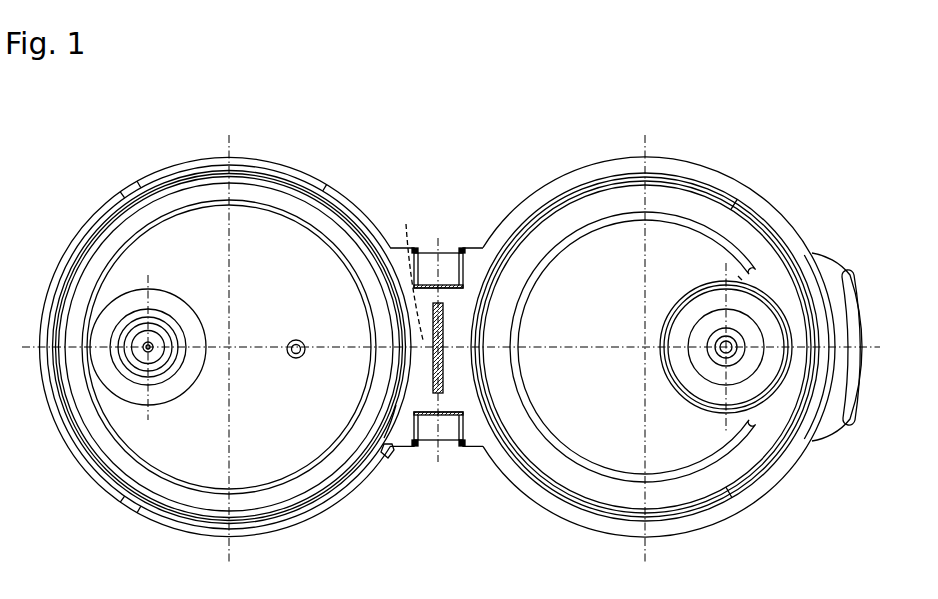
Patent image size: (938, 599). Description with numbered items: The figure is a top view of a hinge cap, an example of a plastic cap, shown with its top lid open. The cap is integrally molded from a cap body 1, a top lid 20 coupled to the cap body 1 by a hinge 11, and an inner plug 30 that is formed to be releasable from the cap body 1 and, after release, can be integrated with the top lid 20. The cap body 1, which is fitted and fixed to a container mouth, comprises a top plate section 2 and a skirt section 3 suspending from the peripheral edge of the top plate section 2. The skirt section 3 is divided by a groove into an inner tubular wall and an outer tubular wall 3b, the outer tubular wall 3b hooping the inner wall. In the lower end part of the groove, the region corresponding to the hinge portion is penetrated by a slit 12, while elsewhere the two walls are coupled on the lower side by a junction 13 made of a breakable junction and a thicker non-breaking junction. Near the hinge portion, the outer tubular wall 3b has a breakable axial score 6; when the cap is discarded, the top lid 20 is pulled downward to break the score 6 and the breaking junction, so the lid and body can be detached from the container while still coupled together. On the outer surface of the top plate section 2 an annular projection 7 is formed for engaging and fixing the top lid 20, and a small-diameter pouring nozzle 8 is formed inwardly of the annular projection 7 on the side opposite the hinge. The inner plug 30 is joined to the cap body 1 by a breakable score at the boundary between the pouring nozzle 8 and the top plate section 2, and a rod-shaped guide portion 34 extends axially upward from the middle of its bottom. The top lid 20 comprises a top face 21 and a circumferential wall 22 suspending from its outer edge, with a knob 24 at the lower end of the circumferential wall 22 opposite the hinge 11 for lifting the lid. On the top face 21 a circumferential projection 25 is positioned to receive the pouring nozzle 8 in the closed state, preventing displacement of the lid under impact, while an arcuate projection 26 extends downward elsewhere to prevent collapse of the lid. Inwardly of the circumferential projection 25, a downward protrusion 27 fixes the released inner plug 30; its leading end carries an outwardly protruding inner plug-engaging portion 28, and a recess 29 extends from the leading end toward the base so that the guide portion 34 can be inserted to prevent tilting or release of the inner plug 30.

The cap body 1 is at (287, 150).
The top plate section 2 is at (200, 237).
The skirt section 3 is at (182, 522).
The outer tubular wall 3b is at (311, 182).
The axial score 6 is at (396, 460).
The annular projection 7 is at (88, 247).
The pouring nozzle 8 is at (125, 392).
The hinge 11 is at (447, 252).
The slit 12 is at (397, 423).
The junction 13 is at (368, 233).
The top lid 20 is at (690, 152).
The top face 21 is at (718, 212).
The circumferential wall 22 is at (690, 527).
The knob 24 is at (852, 418).
The circumferential projection 25 is at (767, 297).
The arcuate projection 26 is at (577, 463).
The protrusion 27 is at (716, 383).
The inner plug-engaging portion 28 is at (716, 361).
The recess 29 is at (705, 328).
The inner plug 30 is at (167, 318).
The guide portion 34 is at (147, 343).